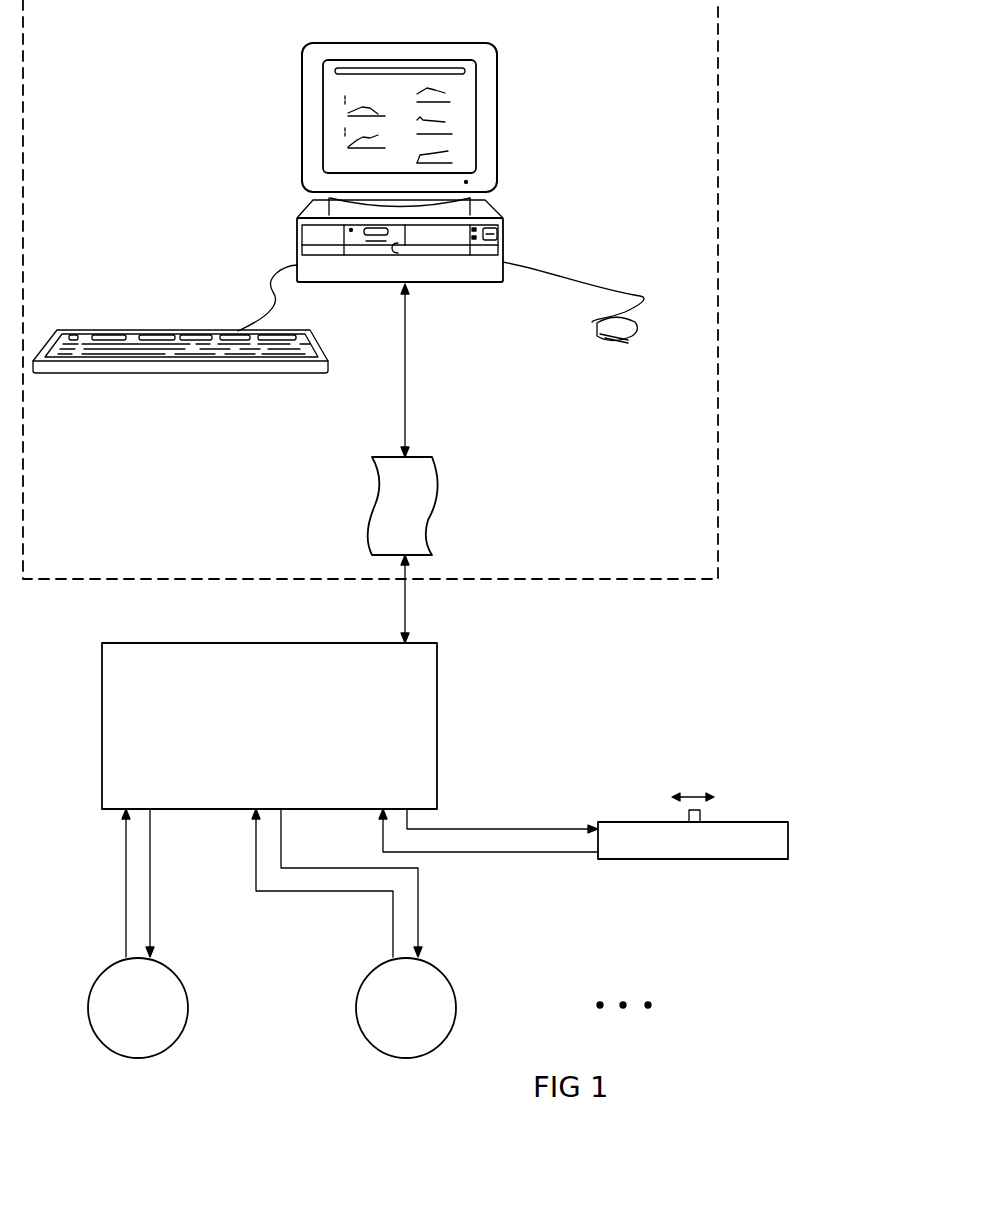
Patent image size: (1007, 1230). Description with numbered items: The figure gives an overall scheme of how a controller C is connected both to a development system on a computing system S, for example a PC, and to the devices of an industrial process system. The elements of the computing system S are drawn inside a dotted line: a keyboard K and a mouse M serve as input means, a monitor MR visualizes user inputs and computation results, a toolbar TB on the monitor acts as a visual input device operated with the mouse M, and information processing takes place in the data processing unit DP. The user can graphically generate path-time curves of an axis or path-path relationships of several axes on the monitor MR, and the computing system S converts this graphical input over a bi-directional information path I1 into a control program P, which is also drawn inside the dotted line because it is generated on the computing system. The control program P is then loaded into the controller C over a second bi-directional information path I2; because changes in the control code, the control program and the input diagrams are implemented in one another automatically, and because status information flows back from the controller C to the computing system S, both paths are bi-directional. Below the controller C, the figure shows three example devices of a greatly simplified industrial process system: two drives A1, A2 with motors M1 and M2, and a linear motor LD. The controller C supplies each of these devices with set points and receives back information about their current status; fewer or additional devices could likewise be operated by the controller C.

The computing system S is at (718, 233).
The monitor MR is at (486, 104).
The toolbar TB is at (396, 68).
The data processing unit DP is at (506, 234).
The keyboard K is at (113, 377).
The mouse M is at (636, 329).
The information path I1 is at (405, 408).
The control program P is at (392, 500).
The information path I2 is at (405, 615).
The controller C is at (437, 740).
The linear motor LD is at (681, 862).
The drive A1 is at (161, 1008).
The drive A2 is at (430, 1008).
The motor M1 is at (137, 1009).
The motor M2 is at (405, 1009).